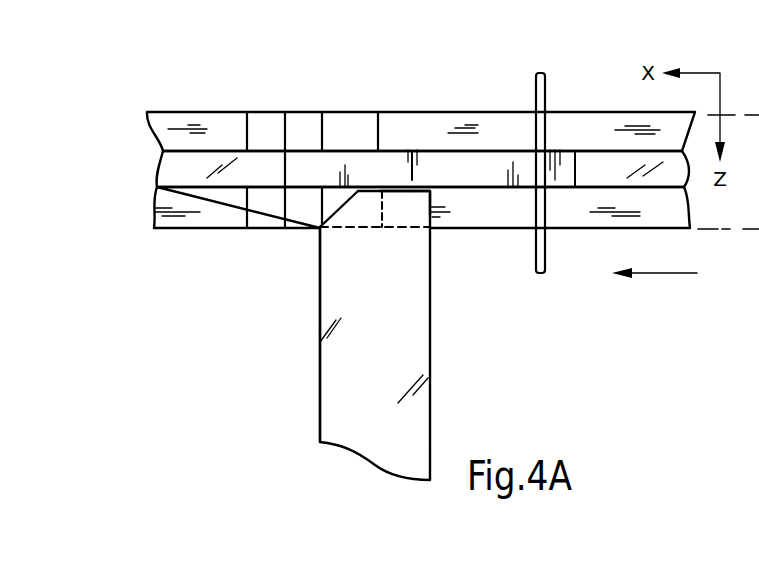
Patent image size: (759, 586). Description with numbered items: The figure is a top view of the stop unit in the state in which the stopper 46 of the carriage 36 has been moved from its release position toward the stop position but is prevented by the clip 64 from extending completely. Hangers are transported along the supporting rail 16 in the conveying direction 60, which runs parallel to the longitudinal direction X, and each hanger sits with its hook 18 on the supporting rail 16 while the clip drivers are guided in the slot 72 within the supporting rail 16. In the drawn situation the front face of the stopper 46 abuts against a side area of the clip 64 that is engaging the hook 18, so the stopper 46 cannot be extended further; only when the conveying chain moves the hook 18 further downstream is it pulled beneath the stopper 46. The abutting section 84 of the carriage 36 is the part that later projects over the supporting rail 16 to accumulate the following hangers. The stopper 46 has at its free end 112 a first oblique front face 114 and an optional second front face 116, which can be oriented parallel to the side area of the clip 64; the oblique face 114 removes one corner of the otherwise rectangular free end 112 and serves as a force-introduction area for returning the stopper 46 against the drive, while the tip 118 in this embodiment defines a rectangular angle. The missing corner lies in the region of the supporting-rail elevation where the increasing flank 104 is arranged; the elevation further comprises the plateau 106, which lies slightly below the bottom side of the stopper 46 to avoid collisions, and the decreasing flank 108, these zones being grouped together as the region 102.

The supporting rail 16 is at (213, 111).
The hook 18 is at (535, 93).
The carriage 36 is at (300, 398).
The stopper 46 is at (383, 328).
The conveying direction 60 is at (665, 273).
The clip 64 is at (458, 180).
The slot 72 is at (178, 168).
The abutting section 84 is at (338, 267).
The zone group 102 is at (245, 100).
The increasing flank 104 is at (335, 143).
The plateau 106 is at (289, 144).
The decreasing flank 108 is at (275, 220).
The free end 112 is at (389, 165).
The first oblique front face 114 is at (345, 200).
The second front face 116 is at (413, 190).
The tip 118 is at (405, 212).